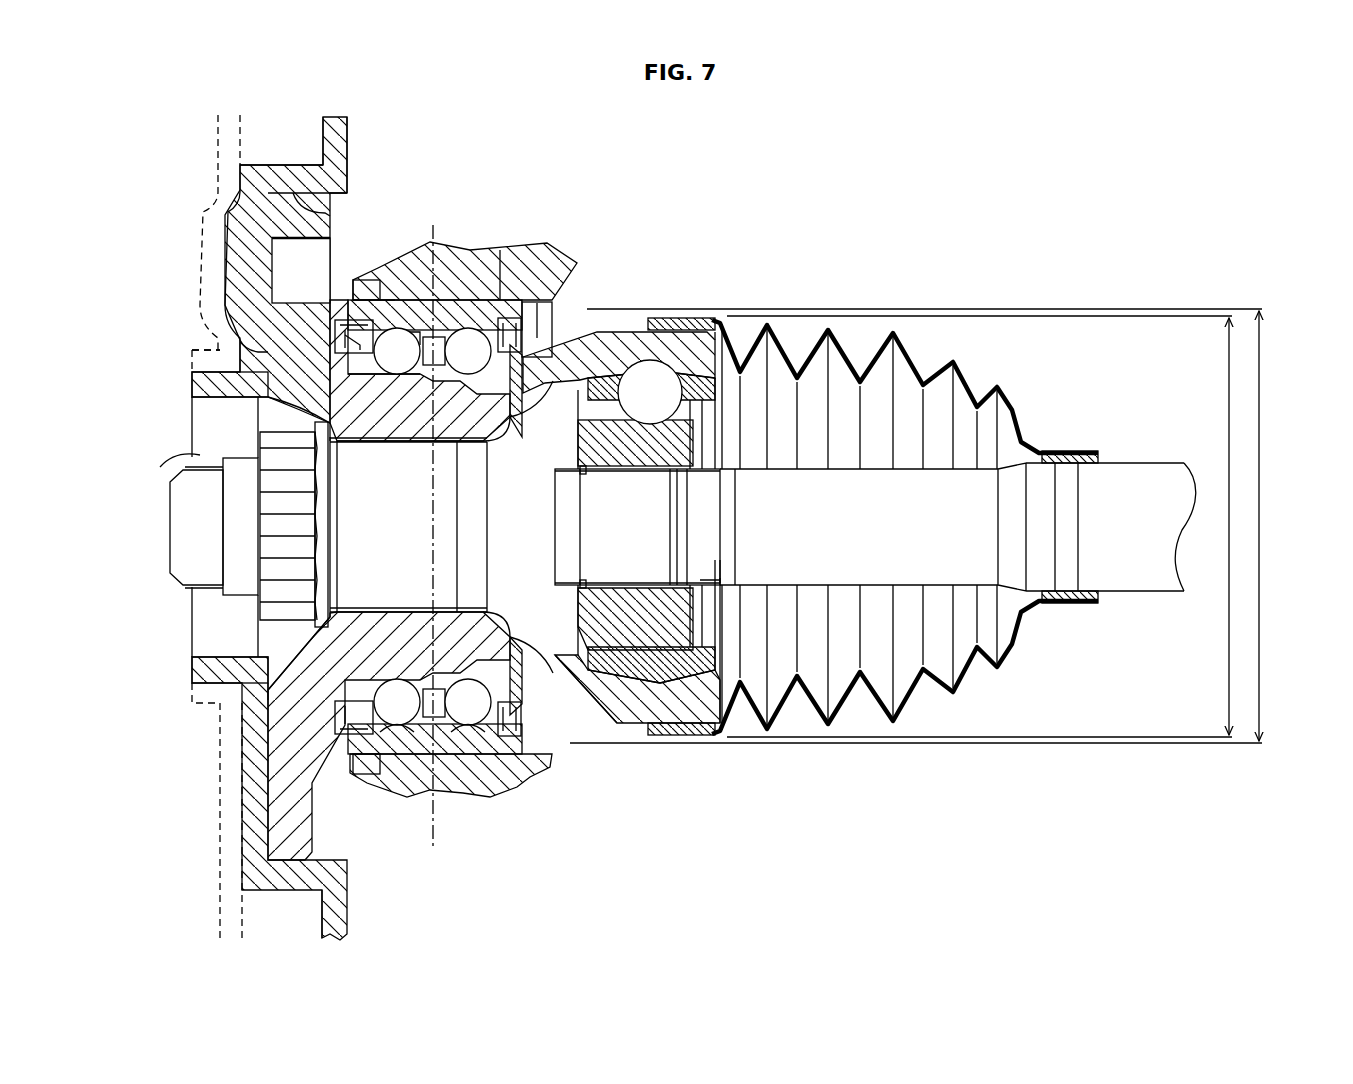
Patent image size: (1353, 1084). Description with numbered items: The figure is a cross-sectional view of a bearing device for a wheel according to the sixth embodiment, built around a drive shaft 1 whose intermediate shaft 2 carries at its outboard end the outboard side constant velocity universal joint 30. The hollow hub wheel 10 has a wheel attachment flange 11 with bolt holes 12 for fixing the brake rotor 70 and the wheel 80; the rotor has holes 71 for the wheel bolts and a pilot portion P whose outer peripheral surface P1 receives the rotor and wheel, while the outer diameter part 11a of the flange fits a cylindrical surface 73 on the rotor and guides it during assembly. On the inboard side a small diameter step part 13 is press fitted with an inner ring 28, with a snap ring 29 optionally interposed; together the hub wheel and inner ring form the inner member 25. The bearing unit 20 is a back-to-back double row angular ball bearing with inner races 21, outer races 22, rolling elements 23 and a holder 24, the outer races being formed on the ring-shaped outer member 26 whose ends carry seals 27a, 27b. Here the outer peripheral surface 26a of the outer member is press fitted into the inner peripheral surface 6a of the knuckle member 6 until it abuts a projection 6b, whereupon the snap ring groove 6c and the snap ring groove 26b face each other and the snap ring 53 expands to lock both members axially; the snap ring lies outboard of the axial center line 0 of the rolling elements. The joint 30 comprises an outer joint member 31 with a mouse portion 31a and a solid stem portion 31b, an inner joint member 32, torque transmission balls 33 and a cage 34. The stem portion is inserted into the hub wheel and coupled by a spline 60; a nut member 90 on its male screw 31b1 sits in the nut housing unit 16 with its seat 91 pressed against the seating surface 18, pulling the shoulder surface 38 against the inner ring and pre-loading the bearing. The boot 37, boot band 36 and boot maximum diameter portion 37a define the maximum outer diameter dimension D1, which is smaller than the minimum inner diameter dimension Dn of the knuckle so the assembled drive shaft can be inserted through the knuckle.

The drive shaft 1 is at (1139, 597).
The intermediate shaft 2 is at (1133, 463).
The knuckle member 6 is at (537, 262).
The inner peripheral surface of the knuckle member 6a is at (512, 287).
The projection 6b is at (548, 265).
The snap ring groove 6c is at (393, 297).
The hub wheel 10 is at (290, 400).
The wheel attachment flange 11 is at (287, 217).
The outer diameter part of the wheel attachment flange 11a is at (295, 208).
The bolt hole 12 is at (290, 248).
The small diameter step part 13 is at (452, 347).
The nut housing unit 16 is at (290, 657).
The seating surface 18 is at (270, 627).
The bearing unit 20 is at (402, 442).
The inner race 21 is at (403, 676).
The outer race 22 is at (413, 726).
The rolling element 23 is at (385, 729).
The holder 24 is at (447, 755).
The inner member 25 is at (563, 490).
The outer member 26 is at (480, 300).
The outer peripheral surface of the outer member 26a is at (395, 343).
The snap ring groove 26b is at (380, 357).
The seal 27a is at (350, 752).
The seal 27b is at (532, 732).
The inner ring 28 is at (510, 377).
The snap ring 29 is at (490, 395).
The outboard side constant velocity universal joint 30 is at (905, 300).
The outer joint member 31 is at (600, 322).
The mouse portion 31a is at (583, 703).
The stem portion 31b is at (270, 693).
The male screw 31b1 is at (160, 467).
The inner joint member 32 is at (635, 647).
The torque transmission ball 33 is at (647, 390).
The cage 34 is at (597, 393).
The boot band 36 is at (683, 318).
The boot 37 is at (913, 705).
The boot maximum diameter portion 37a is at (712, 330).
The shoulder surface 38 is at (523, 673).
The snap ring 53 is at (375, 300).
The spline 60 is at (418, 447).
The brake rotor 70 is at (348, 142).
The hole 71 is at (253, 304).
The cylindrical surface 73 is at (305, 210).
The wheel 80 is at (213, 143).
The nut member 90 is at (222, 543).
The seat 91 is at (323, 522).
The axial center line 0 is at (438, 515).
The pilot portion P is at (200, 383).
The outer peripheral surface of the pilot portion P1 is at (218, 348).
The maximum outer diameter dimension D1 is at (979, 526).
The minimum inner diameter dimension Dn is at (916, 526).